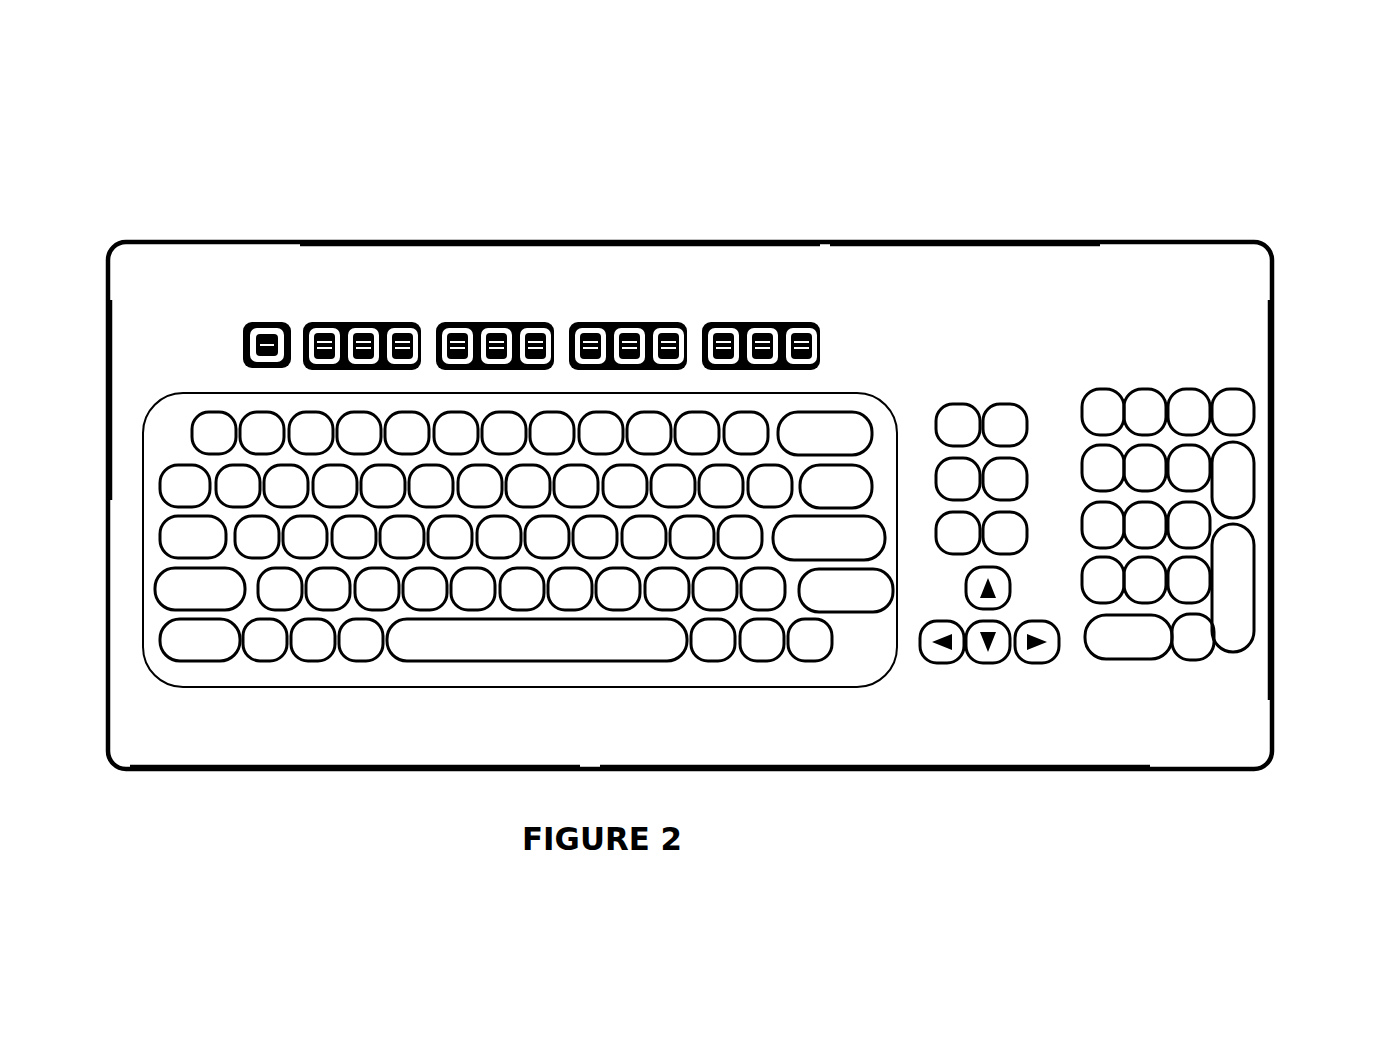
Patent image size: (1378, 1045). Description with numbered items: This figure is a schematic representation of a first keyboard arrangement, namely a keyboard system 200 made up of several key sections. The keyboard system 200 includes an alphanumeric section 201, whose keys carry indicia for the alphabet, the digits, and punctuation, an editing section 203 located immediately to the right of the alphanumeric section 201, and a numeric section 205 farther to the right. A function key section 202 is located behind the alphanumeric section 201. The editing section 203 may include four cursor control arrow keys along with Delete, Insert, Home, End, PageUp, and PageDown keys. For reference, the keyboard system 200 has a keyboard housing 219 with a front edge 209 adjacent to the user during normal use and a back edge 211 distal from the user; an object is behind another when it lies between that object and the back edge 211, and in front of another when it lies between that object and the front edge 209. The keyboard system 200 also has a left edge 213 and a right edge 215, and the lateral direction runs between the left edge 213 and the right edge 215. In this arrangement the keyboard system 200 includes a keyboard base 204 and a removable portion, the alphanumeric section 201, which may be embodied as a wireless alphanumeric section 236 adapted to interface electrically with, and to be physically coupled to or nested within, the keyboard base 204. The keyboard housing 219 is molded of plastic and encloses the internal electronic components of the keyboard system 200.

The keyboard system 200 is at (770, 190).
The alphanumeric section 201 is at (228, 393).
The function key section 202 is at (312, 322).
The editing section 203 is at (972, 388).
The keyboard base 204 is at (392, 228).
The numeric section 205 is at (1145, 383).
The front edge 209 is at (778, 769).
The back edge 211 is at (875, 243).
The left edge 213 is at (107, 390).
The right edge 215 is at (1278, 500).
The keyboard housing 219 is at (345, 732).
The wireless alphanumeric section 236 is at (148, 558).